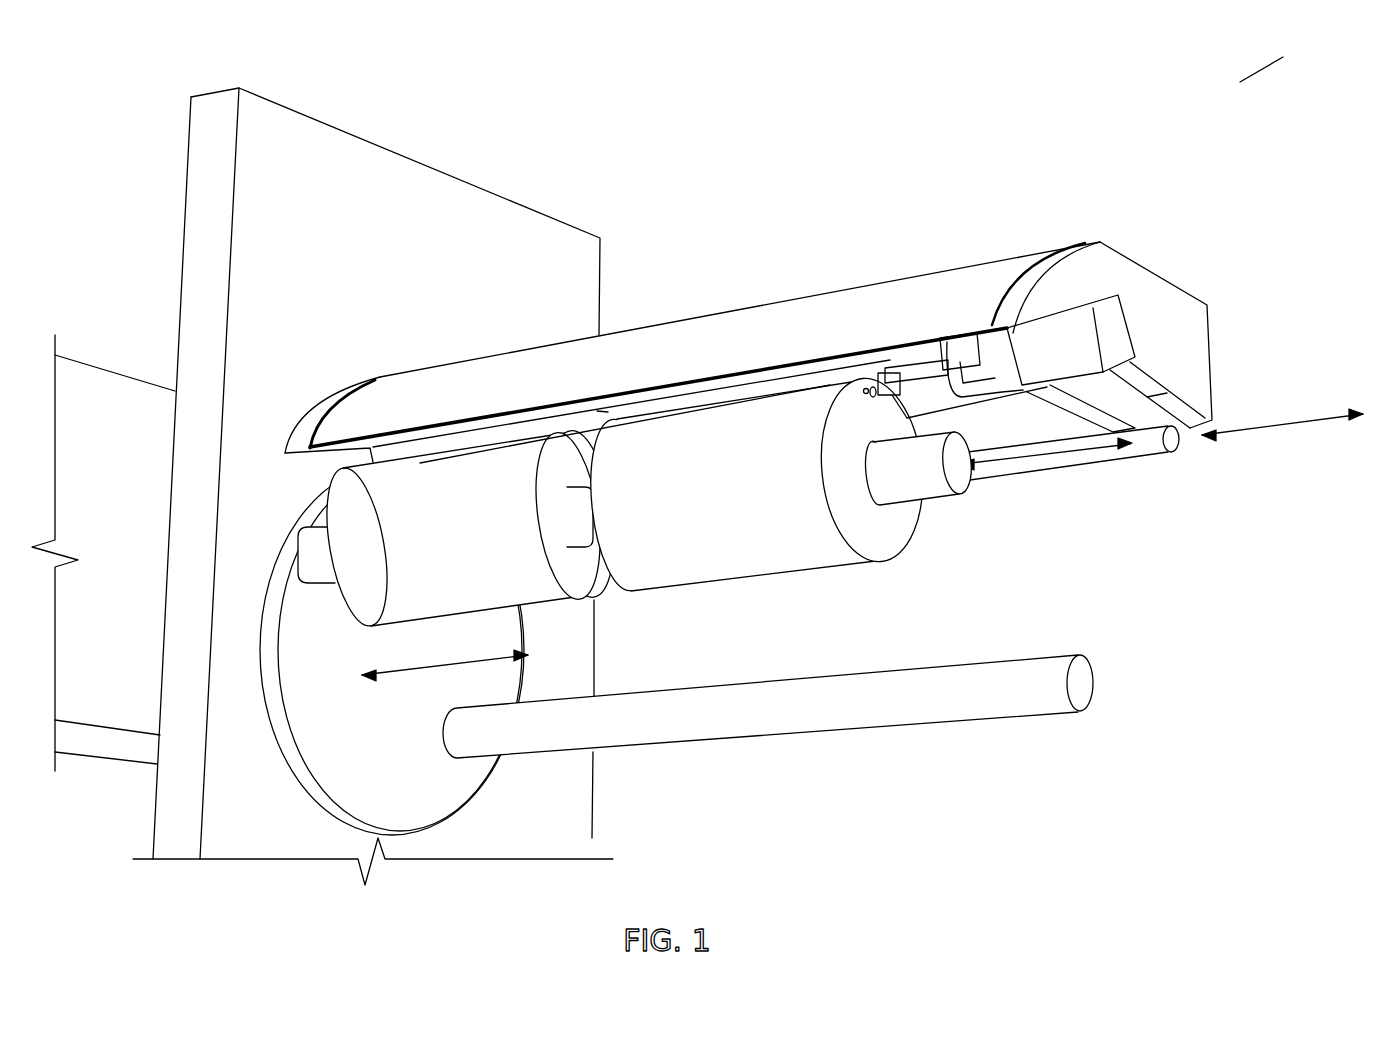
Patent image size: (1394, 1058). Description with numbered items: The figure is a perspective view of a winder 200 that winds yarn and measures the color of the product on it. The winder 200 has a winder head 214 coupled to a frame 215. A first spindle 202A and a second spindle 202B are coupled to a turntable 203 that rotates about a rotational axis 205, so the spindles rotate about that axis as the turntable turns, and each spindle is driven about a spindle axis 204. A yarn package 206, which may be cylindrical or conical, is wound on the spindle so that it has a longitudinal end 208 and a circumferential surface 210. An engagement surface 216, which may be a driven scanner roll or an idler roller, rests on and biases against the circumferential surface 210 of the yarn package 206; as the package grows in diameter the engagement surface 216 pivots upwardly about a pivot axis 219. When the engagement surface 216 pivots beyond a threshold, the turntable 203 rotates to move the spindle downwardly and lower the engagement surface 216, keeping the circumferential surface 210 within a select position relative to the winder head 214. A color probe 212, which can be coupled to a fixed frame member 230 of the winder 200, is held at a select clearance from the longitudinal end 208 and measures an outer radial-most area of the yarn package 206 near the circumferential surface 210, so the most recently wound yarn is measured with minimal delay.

The winder 200 is at (1240, 82).
The first spindle 202A is at (975, 477).
The second spindle 202B is at (1090, 680).
The turntable 203 is at (395, 783).
The spindle axis 204 is at (1073, 453).
The rotational axis 205 is at (430, 670).
The yarn package 206 is at (670, 552).
The longitudinal end 208 is at (880, 540).
The circumferential surface 210 is at (807, 573).
The color probe 212 is at (914, 374).
The winder head 214 is at (810, 315).
The frame 215 is at (360, 185).
The engagement surface 216 is at (603, 420).
The pivot axis 219 is at (1290, 424).
The fixed frame member 230 is at (1168, 312).